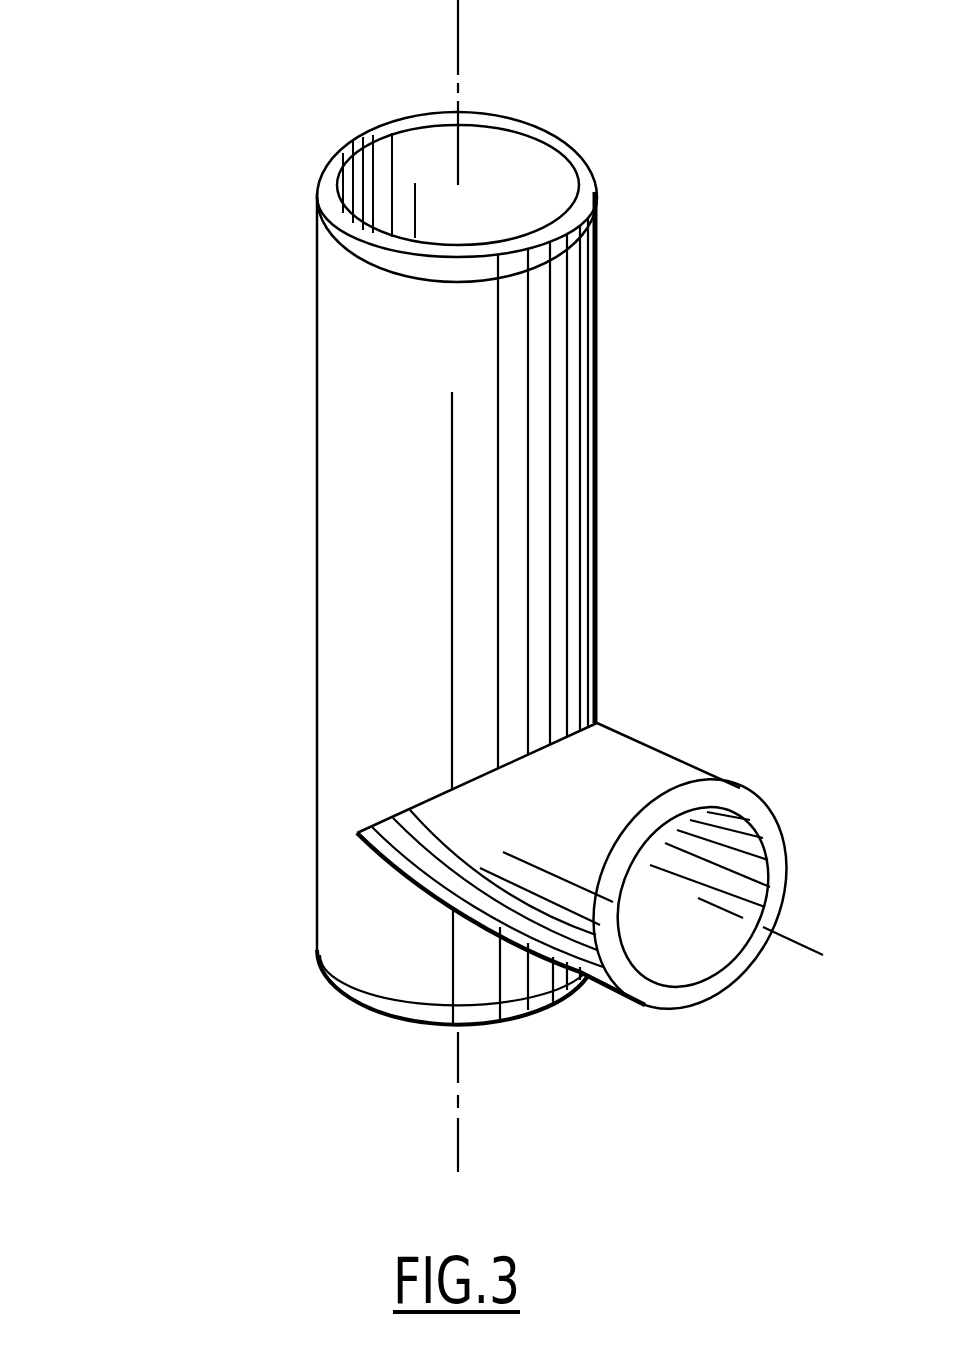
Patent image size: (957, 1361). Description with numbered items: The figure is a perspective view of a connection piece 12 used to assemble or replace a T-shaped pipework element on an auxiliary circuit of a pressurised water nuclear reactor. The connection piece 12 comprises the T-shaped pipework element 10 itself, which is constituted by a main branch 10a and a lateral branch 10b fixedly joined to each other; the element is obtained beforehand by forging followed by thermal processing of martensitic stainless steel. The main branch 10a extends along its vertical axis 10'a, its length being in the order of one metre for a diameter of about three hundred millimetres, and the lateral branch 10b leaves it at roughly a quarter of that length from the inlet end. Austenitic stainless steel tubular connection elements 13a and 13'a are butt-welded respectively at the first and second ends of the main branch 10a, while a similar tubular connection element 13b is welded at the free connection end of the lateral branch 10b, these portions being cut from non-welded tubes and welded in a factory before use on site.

The T-shaped pipework element 10 is at (525, 512).
The vertical axis of the main branch 10'a is at (589, 586).
The main branch 10a is at (353, 382).
The lateral branch 10b is at (618, 780).
The connection piece 12 is at (152, 669).
The tubular connection element 13a is at (388, 1000).
The tubular connection element 13'a is at (405, 197).
The tubular connection element 13b is at (762, 834).